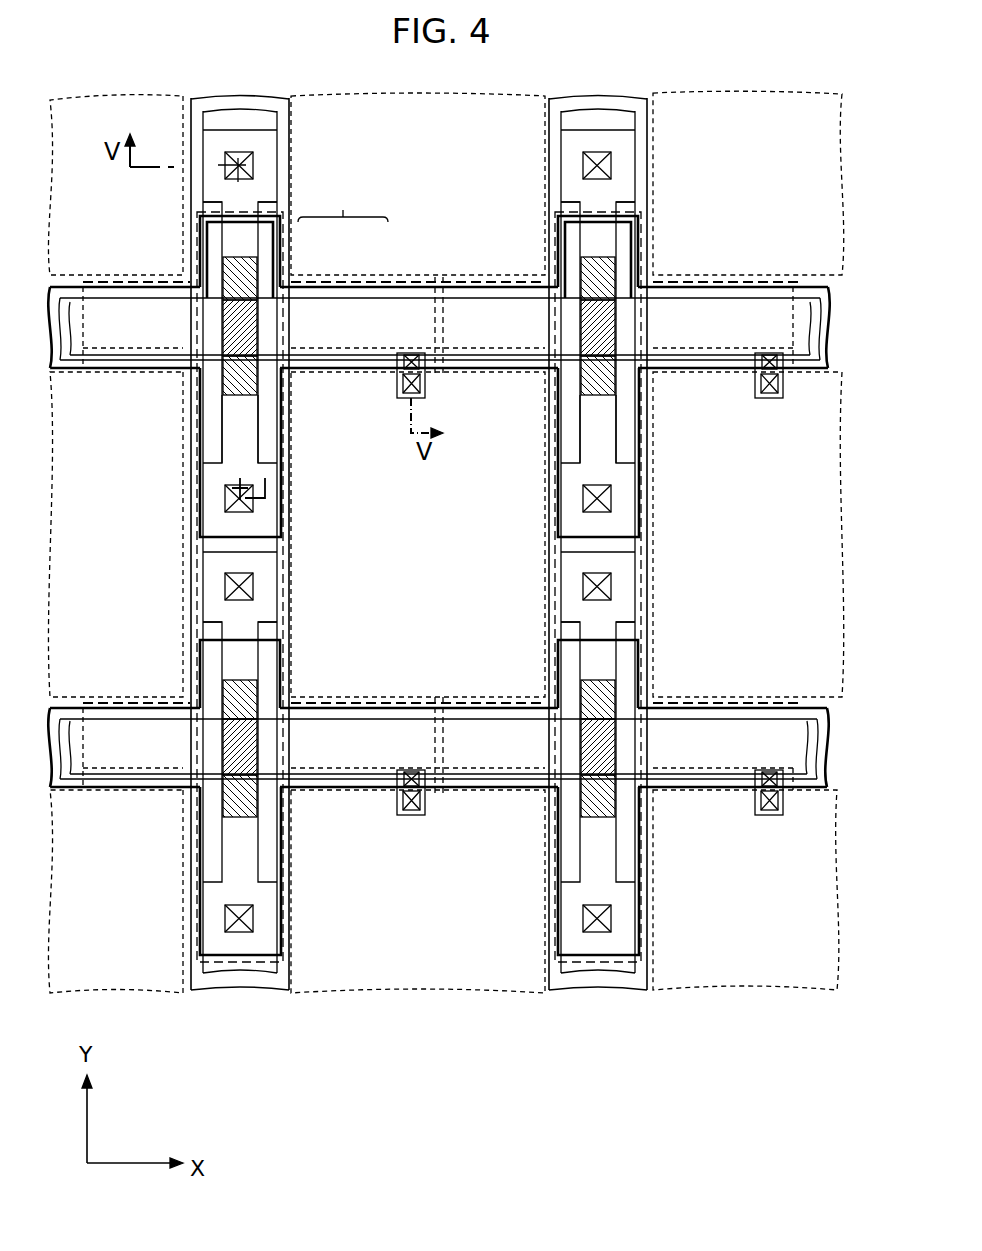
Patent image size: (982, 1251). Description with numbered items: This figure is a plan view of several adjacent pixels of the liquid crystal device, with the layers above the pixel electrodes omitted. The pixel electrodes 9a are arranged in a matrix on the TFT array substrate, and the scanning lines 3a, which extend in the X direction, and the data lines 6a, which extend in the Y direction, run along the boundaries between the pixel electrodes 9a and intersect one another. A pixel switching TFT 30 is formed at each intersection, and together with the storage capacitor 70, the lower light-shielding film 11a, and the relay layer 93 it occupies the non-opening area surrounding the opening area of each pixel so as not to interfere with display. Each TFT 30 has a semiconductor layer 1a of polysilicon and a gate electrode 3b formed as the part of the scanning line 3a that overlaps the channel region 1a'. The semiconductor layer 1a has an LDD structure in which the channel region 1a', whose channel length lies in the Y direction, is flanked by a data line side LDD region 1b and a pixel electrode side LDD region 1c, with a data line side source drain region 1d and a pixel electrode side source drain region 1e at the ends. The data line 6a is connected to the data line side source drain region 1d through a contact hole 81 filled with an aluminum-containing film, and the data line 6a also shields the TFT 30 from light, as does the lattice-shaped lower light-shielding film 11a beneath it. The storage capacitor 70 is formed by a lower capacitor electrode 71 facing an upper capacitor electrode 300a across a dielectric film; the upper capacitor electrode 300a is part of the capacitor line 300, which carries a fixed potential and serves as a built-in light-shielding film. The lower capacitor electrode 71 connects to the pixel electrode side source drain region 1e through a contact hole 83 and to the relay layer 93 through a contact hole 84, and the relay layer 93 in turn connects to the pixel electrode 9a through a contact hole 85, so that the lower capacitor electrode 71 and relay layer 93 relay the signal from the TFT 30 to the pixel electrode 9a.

The data line 6a is at (292, 145).
The pixel electrode 9a is at (442, 98).
The scanning line 3a is at (348, 720).
The gate electrode 3b is at (235, 315).
The semiconductor layer 1a is at (446, 542).
The channel region 1a' is at (474, 328).
The data line side LDD region 1b is at (608, 270).
The pixel electrode side LDD region 1c is at (610, 380).
The data line side source drain region 1d is at (600, 235).
The pixel electrode side source drain region 1e is at (604, 430).
The pixel switching TFT 30 is at (627, 315).
The contact hole 81 is at (228, 162).
The contact hole 83 is at (253, 503).
The contact hole 84 is at (418, 383).
The contact hole 85 is at (410, 356).
The relay layer 93 is at (407, 357).
The lower light-shielding film 11a is at (278, 629).
The storage capacitor 70 is at (343, 204).
The lower capacitor electrode 71 is at (367, 280).
The upper capacitor electrode 300a is at (273, 257).
The capacitor line 300 is at (440, 280).